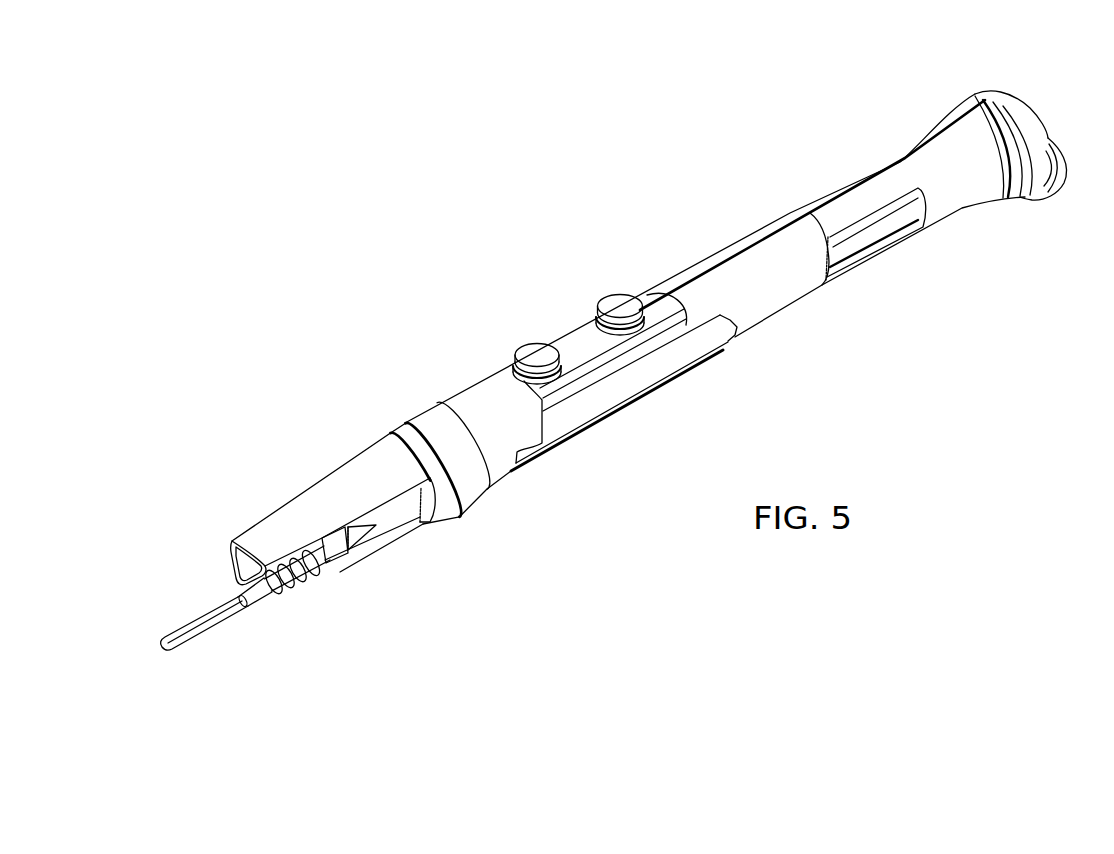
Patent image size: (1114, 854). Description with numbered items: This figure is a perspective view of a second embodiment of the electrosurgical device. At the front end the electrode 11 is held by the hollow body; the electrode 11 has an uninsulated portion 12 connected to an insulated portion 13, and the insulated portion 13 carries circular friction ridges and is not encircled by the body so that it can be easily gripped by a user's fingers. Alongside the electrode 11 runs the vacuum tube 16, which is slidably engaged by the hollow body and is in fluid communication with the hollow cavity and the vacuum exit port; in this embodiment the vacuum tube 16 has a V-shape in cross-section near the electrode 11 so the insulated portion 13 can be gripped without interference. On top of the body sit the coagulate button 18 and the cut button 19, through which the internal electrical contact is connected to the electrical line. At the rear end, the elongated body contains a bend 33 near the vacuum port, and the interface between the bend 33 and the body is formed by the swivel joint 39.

The electrode 11 is at (247, 655).
The uninsulated portion 12 is at (176, 652).
The insulated portion 13 is at (320, 567).
The vacuum tube 16 is at (258, 535).
The coagulate button 18 is at (532, 348).
The cut button 19 is at (615, 300).
The bend 33 is at (1020, 118).
The swivel joint 39 is at (972, 102).